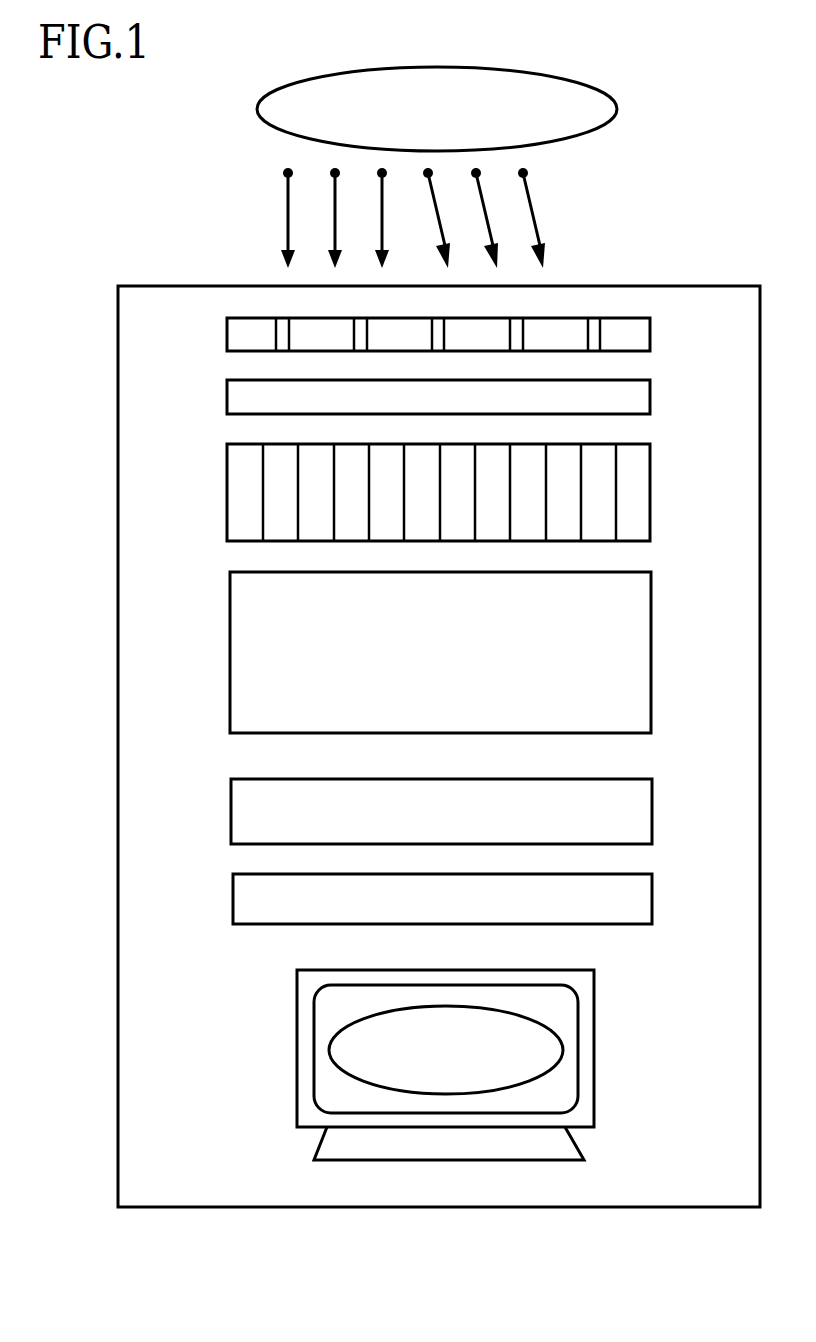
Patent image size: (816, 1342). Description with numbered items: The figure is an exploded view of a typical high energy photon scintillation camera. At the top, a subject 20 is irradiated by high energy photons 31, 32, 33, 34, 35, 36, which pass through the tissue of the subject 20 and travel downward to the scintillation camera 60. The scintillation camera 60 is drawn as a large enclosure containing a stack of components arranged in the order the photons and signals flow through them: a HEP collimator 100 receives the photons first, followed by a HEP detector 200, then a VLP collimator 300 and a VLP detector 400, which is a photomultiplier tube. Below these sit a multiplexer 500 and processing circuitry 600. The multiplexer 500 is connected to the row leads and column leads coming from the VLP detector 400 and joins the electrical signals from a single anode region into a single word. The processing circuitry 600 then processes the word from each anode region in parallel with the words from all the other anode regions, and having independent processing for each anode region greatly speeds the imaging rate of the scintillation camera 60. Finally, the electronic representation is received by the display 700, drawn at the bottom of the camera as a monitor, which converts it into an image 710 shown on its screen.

The subject 20 is at (258, 111).
The HEP 31 is at (288, 190).
The HEP 32 is at (335, 218).
The HEP 33 is at (382, 236).
The HEP 34 is at (435, 198).
The HEP 35 is at (483, 210).
The HEP 36 is at (537, 240).
The scintillation camera 60 is at (118, 538).
The HEP collimator 100 is at (227, 326).
The HEP detector 200 is at (227, 390).
The VLP collimator 300 is at (227, 478).
The VLP detector 400 is at (230, 678).
The multiplexer 500 is at (231, 817).
The processing circuitry 600 is at (233, 911).
The display 700 is at (435, 1065).
The image 710 is at (560, 1053).